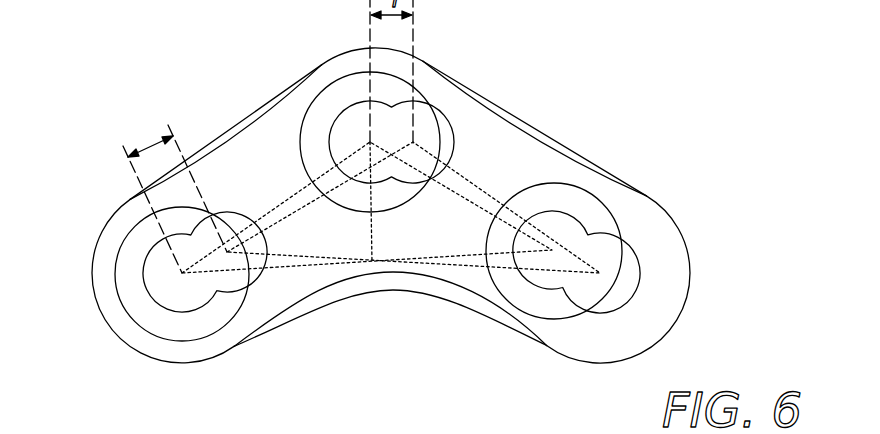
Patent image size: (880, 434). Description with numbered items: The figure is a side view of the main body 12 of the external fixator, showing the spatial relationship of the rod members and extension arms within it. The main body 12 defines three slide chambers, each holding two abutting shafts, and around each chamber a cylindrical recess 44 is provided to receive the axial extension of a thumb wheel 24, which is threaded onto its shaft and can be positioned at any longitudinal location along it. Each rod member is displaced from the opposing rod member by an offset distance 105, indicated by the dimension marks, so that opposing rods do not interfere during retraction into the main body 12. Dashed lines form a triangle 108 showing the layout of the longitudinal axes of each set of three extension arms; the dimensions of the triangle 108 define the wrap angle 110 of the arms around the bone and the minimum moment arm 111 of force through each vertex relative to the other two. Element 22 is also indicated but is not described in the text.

The main body 12 is at (202, 62).
The cylindrical recess 44 is at (302, 100).
The offset distance 105 is at (146, 148).
The triangle 108 is at (273, 268).
The wrap angle 110 is at (403, 147).
The minimum moment arm 111 is at (372, 232).
The first bone 22 is at (382, 428).
The thumb wheel 24 is at (460, 428).